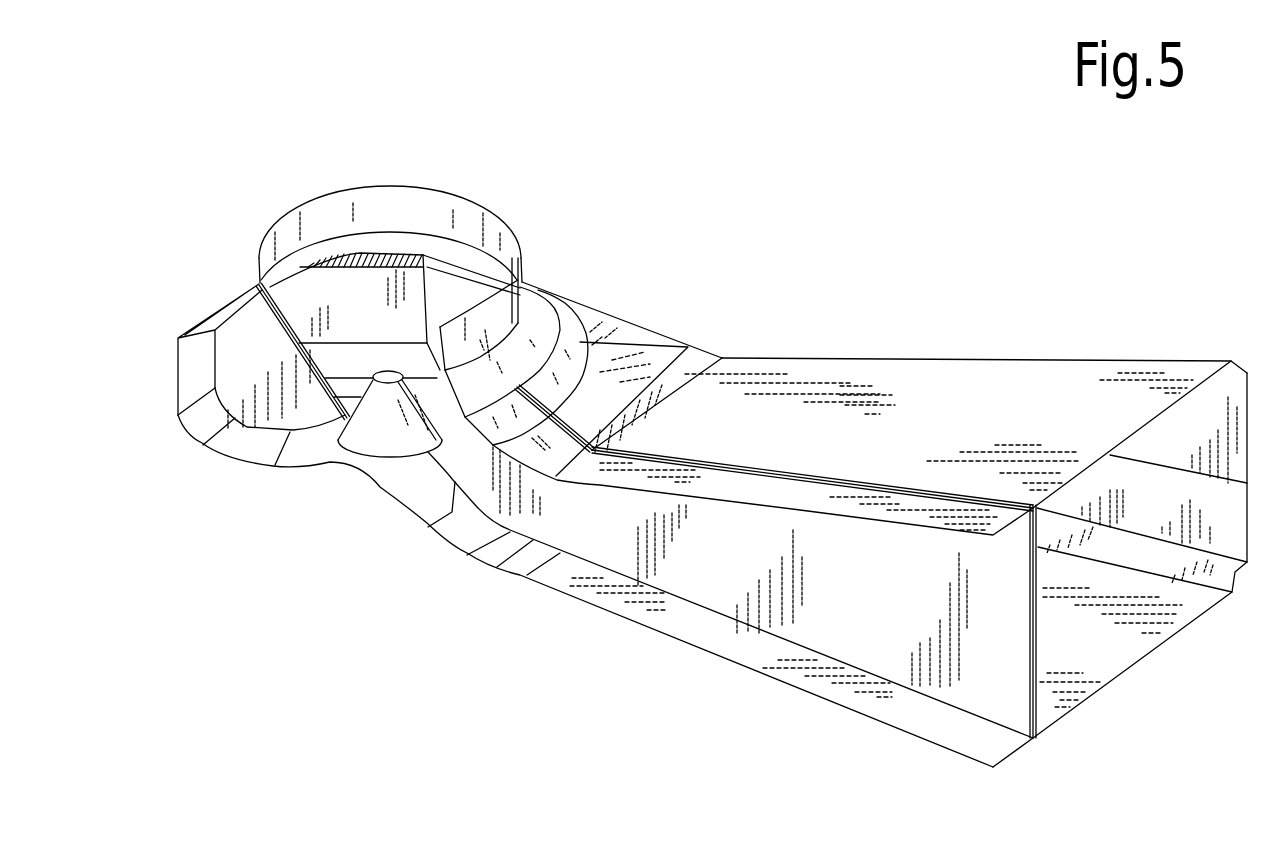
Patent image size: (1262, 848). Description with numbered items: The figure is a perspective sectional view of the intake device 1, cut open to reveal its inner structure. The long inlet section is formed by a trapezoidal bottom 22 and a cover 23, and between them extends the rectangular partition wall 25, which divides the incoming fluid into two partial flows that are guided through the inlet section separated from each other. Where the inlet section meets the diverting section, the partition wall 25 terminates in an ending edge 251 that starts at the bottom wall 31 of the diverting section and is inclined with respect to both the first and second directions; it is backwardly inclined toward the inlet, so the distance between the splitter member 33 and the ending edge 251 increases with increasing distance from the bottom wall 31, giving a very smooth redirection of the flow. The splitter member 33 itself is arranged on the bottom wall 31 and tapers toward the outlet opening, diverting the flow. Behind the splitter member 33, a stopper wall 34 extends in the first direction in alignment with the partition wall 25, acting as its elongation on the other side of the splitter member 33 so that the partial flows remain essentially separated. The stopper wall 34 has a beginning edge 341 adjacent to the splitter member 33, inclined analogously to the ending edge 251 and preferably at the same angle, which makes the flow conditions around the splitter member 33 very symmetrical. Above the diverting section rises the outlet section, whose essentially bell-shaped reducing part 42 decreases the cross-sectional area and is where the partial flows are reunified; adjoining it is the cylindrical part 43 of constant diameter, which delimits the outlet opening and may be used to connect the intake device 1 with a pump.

The intake device 1 is at (955, 238).
The bottom 22 is at (1115, 634).
The cover 23 is at (1040, 397).
The partition wall 25 is at (1028, 637).
The ending edge 251 is at (460, 430).
The bottom wall 31 is at (227, 447).
The splitter member 33 is at (365, 380).
The stopper wall 34 is at (243, 363).
The beginning edge 341 is at (287, 328).
The reducing part 42 is at (560, 332).
The cylindrical part 43 is at (436, 195).